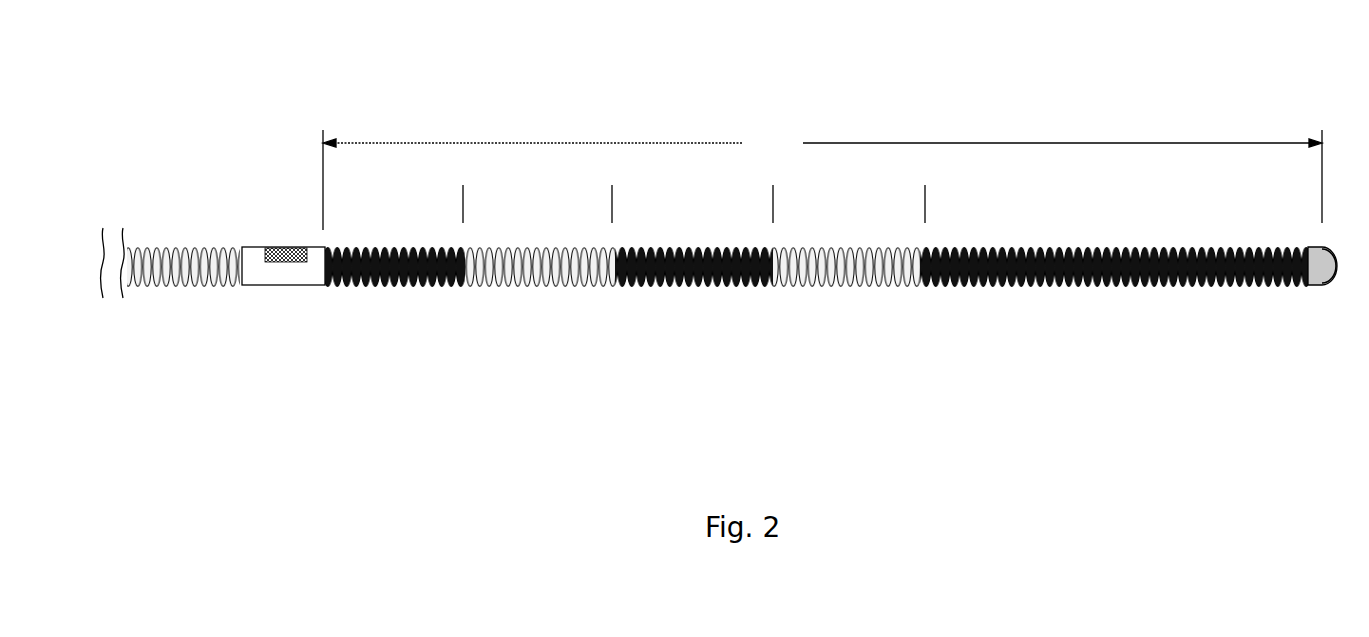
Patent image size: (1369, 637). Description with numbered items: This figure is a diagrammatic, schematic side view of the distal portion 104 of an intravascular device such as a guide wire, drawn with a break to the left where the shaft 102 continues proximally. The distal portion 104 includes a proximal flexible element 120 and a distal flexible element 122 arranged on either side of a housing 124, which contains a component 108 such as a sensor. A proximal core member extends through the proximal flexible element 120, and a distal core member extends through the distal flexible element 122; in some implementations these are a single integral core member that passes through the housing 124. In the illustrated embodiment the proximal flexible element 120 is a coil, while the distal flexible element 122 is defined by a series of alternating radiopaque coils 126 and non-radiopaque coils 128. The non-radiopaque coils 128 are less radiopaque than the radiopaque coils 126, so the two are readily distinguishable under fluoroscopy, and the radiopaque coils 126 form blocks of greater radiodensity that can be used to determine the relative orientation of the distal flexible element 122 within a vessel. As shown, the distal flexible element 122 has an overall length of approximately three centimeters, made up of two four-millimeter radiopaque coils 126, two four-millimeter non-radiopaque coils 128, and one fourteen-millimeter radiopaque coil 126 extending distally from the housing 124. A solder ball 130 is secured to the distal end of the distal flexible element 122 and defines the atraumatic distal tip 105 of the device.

The catheter shaft 102 is at (187, 287).
The distal portion 104 is at (680, 105).
The distal tip 105 is at (1337, 245).
The component 108 is at (287, 263).
The proximal flexible element 120 is at (170, 246).
The distal flexible element 122 is at (816, 329).
The housing 124 is at (253, 246).
The radiopaque coils 126 is at (383, 286).
The non-radiopaque coils 128 is at (535, 287).
The solder ball 130 is at (1322, 287).